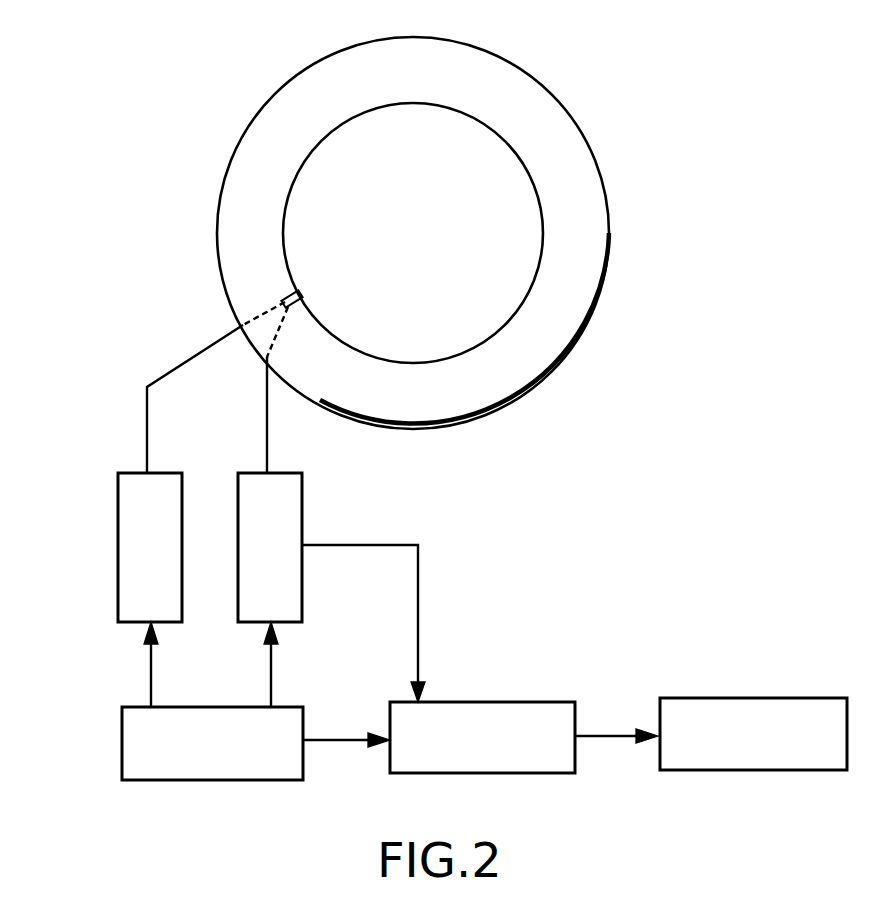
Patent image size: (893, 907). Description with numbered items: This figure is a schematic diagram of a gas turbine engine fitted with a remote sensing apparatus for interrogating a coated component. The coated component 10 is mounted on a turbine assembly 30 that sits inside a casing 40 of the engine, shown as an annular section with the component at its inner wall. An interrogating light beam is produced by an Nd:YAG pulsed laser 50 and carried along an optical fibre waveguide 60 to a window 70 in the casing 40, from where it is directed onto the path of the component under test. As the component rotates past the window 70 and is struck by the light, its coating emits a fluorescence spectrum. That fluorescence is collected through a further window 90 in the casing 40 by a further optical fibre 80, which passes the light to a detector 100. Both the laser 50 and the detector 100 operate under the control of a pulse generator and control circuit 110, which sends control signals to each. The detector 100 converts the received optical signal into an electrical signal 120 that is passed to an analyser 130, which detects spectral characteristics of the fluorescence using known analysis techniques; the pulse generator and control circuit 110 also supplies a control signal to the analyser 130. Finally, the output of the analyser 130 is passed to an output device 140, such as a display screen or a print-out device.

The coated component 10 is at (284, 295).
The turbine assembly 30 is at (544, 217).
The casing 40 is at (603, 176).
The Nd:YAG pulsed laser 50 is at (118, 535).
The optical fibre waveguide 60 is at (146, 412).
The window 70 is at (240, 324).
The further optical fibre 80 is at (270, 414).
The further window 90 is at (260, 362).
The detector 100 is at (302, 498).
The pulse generator and control circuit 110 is at (207, 780).
The electrical signal 120 is at (418, 596).
The analyser 130 is at (533, 773).
The output device 140 is at (768, 770).